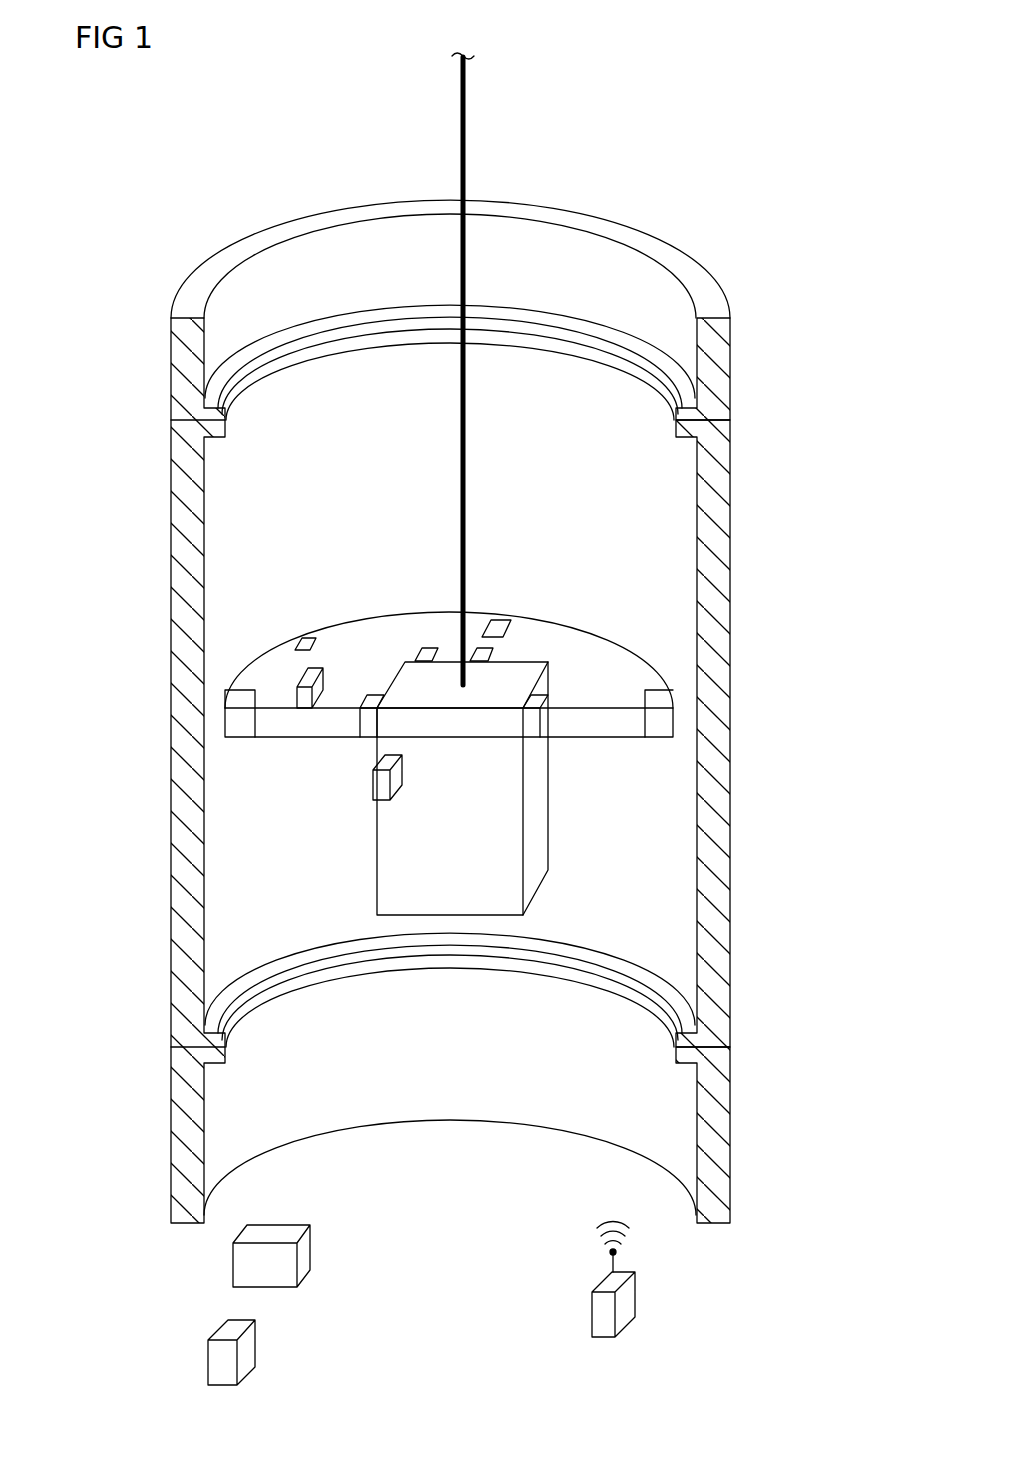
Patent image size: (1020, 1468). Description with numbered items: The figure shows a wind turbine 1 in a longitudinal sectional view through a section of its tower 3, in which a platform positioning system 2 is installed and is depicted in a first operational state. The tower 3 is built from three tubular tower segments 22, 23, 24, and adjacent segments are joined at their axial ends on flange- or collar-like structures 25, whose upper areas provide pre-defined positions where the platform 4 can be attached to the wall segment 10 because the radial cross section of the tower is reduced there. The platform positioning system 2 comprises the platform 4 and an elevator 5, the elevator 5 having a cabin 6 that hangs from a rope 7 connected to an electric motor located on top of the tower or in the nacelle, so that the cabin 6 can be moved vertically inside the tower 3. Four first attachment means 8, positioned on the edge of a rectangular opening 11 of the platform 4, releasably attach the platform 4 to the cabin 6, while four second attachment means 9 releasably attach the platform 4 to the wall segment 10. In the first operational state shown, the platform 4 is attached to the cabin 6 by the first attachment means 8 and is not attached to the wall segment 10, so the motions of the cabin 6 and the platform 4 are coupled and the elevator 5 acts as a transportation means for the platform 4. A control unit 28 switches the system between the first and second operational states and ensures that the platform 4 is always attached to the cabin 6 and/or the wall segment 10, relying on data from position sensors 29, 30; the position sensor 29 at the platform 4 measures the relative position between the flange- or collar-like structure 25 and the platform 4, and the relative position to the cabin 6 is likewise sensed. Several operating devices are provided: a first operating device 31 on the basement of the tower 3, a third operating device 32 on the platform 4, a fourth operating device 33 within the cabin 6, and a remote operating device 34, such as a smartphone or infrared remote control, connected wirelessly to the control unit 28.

The wind turbine 1 is at (628, 149).
The platform positioning system 2 is at (480, 437).
The tower 3 is at (730, 607).
The platform 4 is at (395, 643).
The elevator 5 is at (345, 853).
The cabin 6 is at (550, 832).
The rope 7 is at (466, 102).
The first attachment means 8 is at (380, 697).
The second attachment means 9 is at (242, 700).
The wall segment 10 is at (175, 630).
The rectangular opening 11 is at (467, 731).
The tubular tower segment 22 is at (730, 352).
The tubular tower segment 23 is at (720, 703).
The tubular tower segment 24 is at (730, 1130).
The flange- or collar-like structure 25 is at (212, 416).
The control unit 28 is at (311, 1247).
The position sensor 29 is at (303, 640).
The position sensor 30 is at (425, 650).
The first operating device 31 is at (256, 1345).
The third operating device 32 is at (318, 668).
The fourth operating device 33 is at (372, 783).
The remote operating device 34 is at (590, 1315).